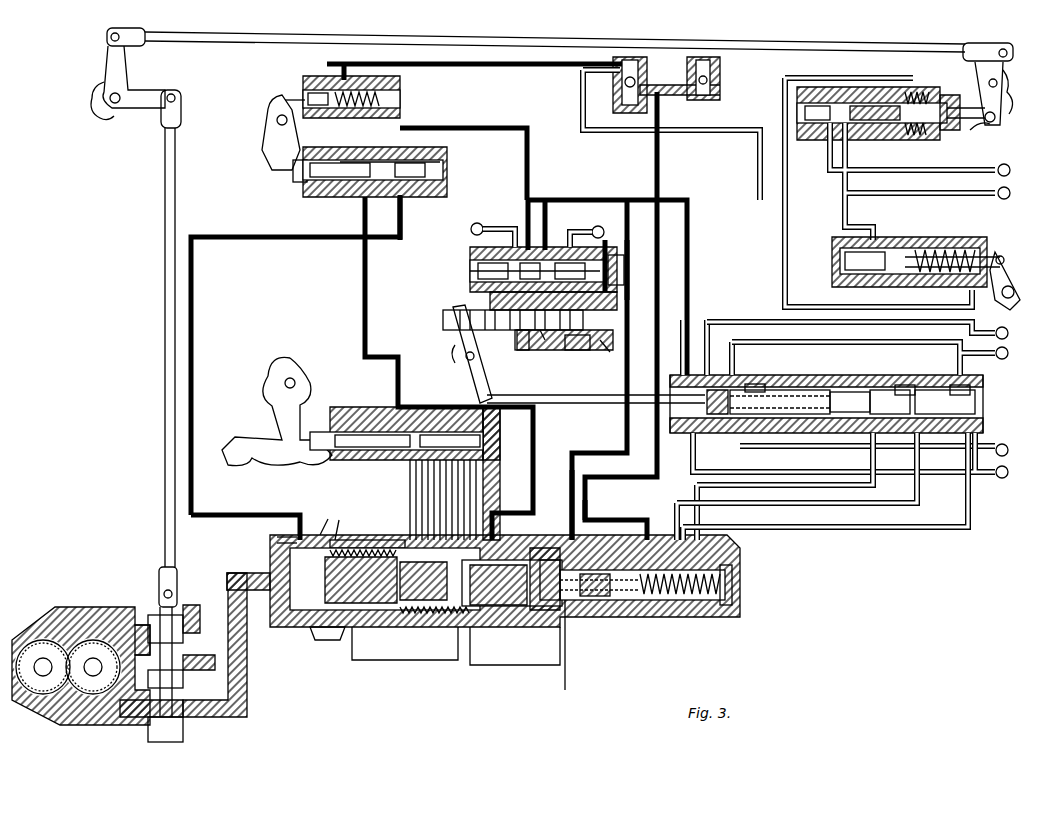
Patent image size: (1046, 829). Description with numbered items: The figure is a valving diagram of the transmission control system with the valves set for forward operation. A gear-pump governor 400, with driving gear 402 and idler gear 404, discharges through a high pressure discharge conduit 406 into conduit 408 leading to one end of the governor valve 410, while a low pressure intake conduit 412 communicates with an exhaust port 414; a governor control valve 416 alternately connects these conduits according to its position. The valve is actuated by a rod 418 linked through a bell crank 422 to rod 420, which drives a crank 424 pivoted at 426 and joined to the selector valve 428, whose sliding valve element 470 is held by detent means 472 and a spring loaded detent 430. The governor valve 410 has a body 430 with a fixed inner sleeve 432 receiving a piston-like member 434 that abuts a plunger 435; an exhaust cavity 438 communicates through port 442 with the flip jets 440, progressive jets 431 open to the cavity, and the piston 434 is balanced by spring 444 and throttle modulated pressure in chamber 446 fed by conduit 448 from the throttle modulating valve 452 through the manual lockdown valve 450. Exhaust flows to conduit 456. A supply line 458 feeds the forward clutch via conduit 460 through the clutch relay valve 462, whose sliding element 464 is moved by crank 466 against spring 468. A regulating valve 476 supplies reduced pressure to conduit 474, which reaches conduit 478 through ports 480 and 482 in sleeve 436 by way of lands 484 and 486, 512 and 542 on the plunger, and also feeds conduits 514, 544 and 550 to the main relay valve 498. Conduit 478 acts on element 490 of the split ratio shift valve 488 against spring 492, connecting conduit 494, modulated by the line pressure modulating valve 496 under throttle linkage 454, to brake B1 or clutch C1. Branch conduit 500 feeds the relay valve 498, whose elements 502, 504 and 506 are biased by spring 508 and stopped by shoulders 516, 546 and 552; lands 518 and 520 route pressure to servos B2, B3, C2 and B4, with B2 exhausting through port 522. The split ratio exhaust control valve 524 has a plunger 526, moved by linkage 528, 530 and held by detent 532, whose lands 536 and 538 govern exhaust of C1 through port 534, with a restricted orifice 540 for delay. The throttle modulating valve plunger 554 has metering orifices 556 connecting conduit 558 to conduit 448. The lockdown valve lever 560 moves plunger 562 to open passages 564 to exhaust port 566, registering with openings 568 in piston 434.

The gear-pump type governor 400 is at (80, 600).
The driving gear 402 is at (42, 640).
The idler gear 404 is at (94, 638).
The high pressure discharge conduit 406 is at (124, 718).
The conduit 408 is at (215, 687).
The governor valve 410 is at (345, 634).
The low pressure intake conduit 412 is at (122, 620).
The exhaust port 414 is at (200, 660).
The governor control valve 416 is at (172, 740).
The rod 418 is at (164, 405).
The rod 420 is at (532, 42).
The bell crank 422 is at (106, 76).
The crank 424 is at (1012, 40).
The pivot 426 is at (991, 132).
The selector valve 428 is at (948, 126).
The spring loaded detent / hollow cylindrical body 430 is at (939, 94).
The progressive jets 431 is at (320, 534).
The fixed inner sleeve 432 is at (336, 538).
The piston-like member 434 is at (426, 606).
The plunger 435 is at (539, 606).
The sleeve 436 is at (658, 600).
The low pressure exhaust cavity 438 is at (352, 640).
The flip jets 440 is at (319, 632).
The port 442 is at (375, 606).
The spring 444 is at (730, 590).
The chamber 446 is at (553, 606).
The conduit 448 is at (368, 314).
The manual lockdown valve 450 is at (387, 460).
The throttle modulating valve 452 is at (357, 196).
The throttle linkage 454 is at (270, 147).
The exhaust conduit 456 is at (494, 666).
The high pressure supply line 458 is at (511, 68).
The conduit 460 is at (845, 208).
The transmission clutch relay valve 462 is at (950, 246).
The sliding element 464 is at (868, 277).
The crank 466 is at (1007, 258).
The spring 468 is at (965, 281).
The sliding valve element 470 is at (856, 88).
The detent means 472 is at (918, 86).
The conduit 474 is at (655, 163).
The regulating valve 476 is at (610, 82).
The conduit 478 is at (597, 450).
The port 480 is at (586, 602).
The port 482 is at (582, 600).
The valve land 484 is at (660, 600).
The valve land 486 is at (580, 600).
The split ratio shift valve 488 is at (511, 284).
The movable element 490 is at (545, 244).
The spring 492 is at (472, 252).
The conduit 494 is at (525, 165).
The line pressure modulating valve 496 is at (362, 116).
The main relay valve 498 is at (876, 375).
The branch conduit 500 is at (689, 289).
The sliding element 502 is at (846, 416).
The sliding element 504 is at (890, 415).
The sliding element 506 is at (945, 415).
The spring 508 is at (702, 414).
The valve land 512 is at (570, 528).
The conduit 514 is at (913, 526).
The shoulder 516 is at (958, 386).
The valve land 518 is at (758, 384).
The valve land 520 is at (726, 416).
The exhaust port 522 is at (780, 415).
The split ratio exhaust control valve 524 is at (530, 332).
The plunger 526 is at (443, 316).
The linkage mechanism 528 is at (598, 398).
The linkage mechanism 530 is at (473, 378).
The spring-loaded detent means 532 is at (509, 338).
The exhaust port 534 is at (604, 352).
The valve land 536 is at (588, 348).
The valve land 538 is at (542, 340).
The restricted orifice 540 is at (617, 252).
The valve land 542 is at (560, 532).
The conduit 544 is at (825, 521).
The shoulder 546 is at (905, 386).
The conduit 550 is at (868, 490).
The shoulder 552 is at (674, 412).
The plunger 554 is at (298, 176).
The metering orifices 556 is at (410, 158).
The conduit 558 is at (194, 310).
The lever 560 is at (295, 468).
The plunger 562 is at (471, 409).
The passages 564 is at (410, 490).
The exhaust port 566 is at (499, 447).
The openings 568 is at (406, 538).
The brake servo B1 is at (486, 225).
The brake servo B2 is at (883, 441).
The brake servo B3 is at (879, 360).
The brake servo B4 is at (867, 325).
The clutch servo C1 is at (597, 228).
The clutch servo C2 is at (860, 467).